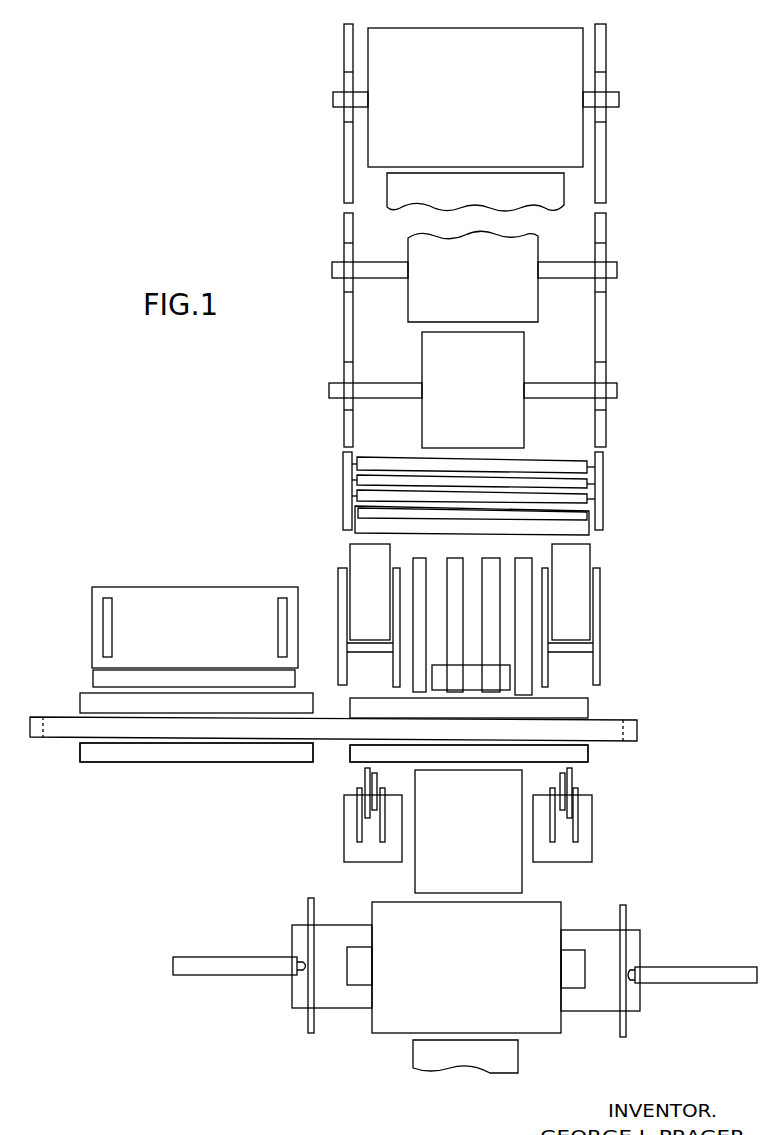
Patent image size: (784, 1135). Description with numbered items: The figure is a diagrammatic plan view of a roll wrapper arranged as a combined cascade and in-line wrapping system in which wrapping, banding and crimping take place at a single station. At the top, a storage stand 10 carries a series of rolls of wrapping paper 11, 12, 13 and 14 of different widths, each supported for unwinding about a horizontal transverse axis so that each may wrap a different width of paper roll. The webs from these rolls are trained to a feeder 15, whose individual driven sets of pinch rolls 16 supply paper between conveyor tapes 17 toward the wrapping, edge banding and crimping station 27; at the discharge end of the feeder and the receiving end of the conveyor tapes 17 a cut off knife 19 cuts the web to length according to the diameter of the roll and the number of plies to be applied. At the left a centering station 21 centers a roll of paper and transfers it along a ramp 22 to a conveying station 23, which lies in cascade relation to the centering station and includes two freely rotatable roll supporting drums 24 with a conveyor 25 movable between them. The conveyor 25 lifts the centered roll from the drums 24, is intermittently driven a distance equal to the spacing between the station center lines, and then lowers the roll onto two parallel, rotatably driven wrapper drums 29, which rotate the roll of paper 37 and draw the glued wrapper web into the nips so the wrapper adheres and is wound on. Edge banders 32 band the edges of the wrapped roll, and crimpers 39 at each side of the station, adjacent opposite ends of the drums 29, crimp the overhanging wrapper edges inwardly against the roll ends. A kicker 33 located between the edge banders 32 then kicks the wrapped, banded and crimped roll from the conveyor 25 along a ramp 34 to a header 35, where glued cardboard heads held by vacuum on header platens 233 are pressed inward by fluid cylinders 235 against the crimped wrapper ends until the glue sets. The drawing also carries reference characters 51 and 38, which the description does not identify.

The storage stand 10 is at (342, 172).
The roll of wrapping paper 11 is at (570, 73).
The roll of wrapping paper 12 is at (553, 195).
The roll of wrapping paper 13 is at (530, 306).
The roll of wrapping paper 14 is at (503, 363).
The feeder 15 is at (607, 465).
The pinch rolls 16 is at (545, 462).
The conveyor tapes 17 is at (415, 567).
The cut off knife 19 is at (580, 537).
The centering station 21 is at (190, 587).
The ramp 22 is at (92, 676).
The conveying station 23 is at (185, 765).
The roll supporting drums 24 is at (307, 693).
The conveyor 25 is at (52, 738).
The wrapping, edge banding and crimping station 27 is at (590, 766).
The wrapper drums 29 is at (588, 710).
The edge banders 32 is at (336, 610).
The kicker 33 is at (510, 680).
The ramp 34 is at (522, 885).
The header 35 is at (348, 1014).
The roll of paper 37 is at (397, 902).
The discharge 38 is at (427, 1080).
The crimpers 39 is at (343, 828).
The centering slots 51 is at (113, 608).
The header platens 233 is at (316, 877).
The cylinders 235 is at (225, 957).